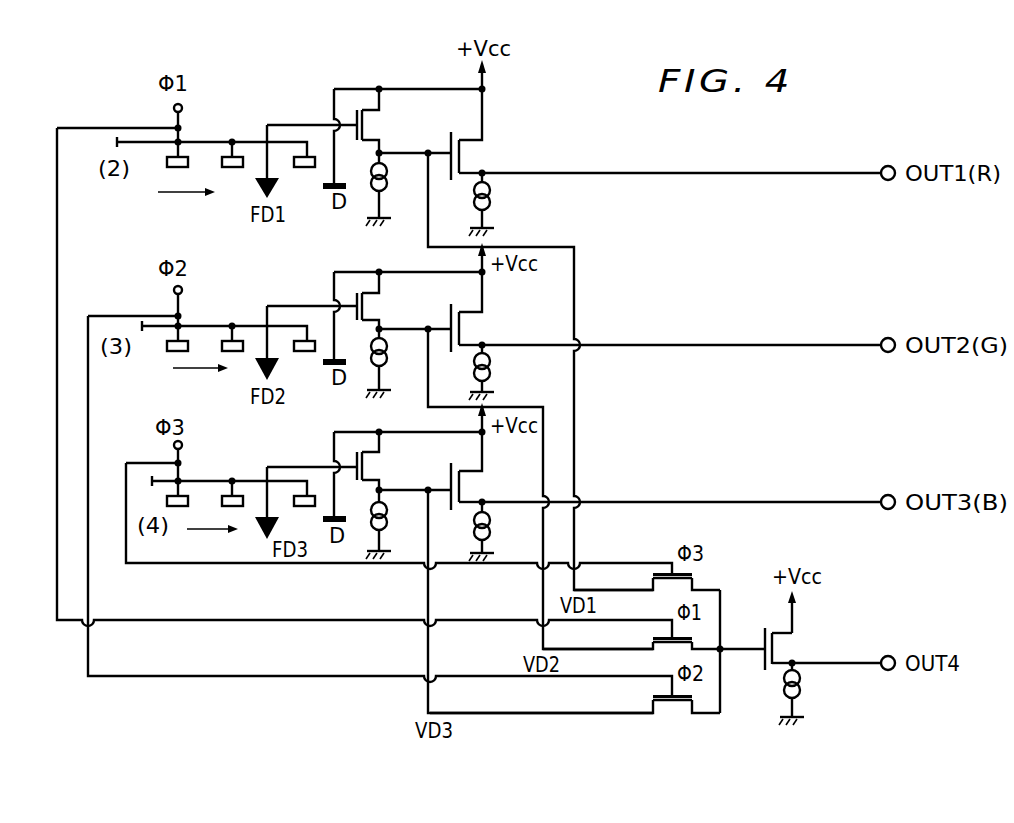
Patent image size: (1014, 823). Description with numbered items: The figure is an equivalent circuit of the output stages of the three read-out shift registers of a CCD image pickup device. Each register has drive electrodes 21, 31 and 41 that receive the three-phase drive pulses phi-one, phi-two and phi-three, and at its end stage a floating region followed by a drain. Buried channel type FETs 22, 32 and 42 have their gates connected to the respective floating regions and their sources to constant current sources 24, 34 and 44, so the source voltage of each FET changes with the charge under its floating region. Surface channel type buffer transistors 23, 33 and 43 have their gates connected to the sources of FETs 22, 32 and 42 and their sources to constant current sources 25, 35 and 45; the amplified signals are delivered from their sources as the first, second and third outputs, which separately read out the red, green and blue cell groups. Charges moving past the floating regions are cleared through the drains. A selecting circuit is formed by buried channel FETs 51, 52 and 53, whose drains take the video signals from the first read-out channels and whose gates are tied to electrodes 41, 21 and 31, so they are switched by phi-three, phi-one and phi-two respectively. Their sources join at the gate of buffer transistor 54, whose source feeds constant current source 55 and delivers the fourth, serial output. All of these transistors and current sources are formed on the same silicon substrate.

The drive electrode 21 is at (293, 156).
The buried channel type FET 22 is at (370, 127).
The surface channel type buffer transistor 23 is at (480, 152).
The constant current source 24 is at (386, 180).
The constant current source 25 is at (491, 203).
The drive electrode 31 is at (293, 340).
The buried channel type FET 32 is at (370, 305).
The surface channel type buffer transistor 33 is at (478, 327).
The constant current source 34 is at (388, 360).
The constant current source 35 is at (491, 373).
The drive electrode 41 is at (293, 495).
The buried channel type FET 42 is at (370, 468).
The surface channel type buffer transistor 43 is at (477, 486).
The constant current source 44 is at (388, 518).
The constant current source 45 is at (492, 528).
The buried channel FET 51 is at (698, 582).
The buried channel FET 52 is at (698, 640).
The buried channel FET 53 is at (697, 703).
The buffer transistor 54 is at (788, 648).
The constant current source 55 is at (803, 693).